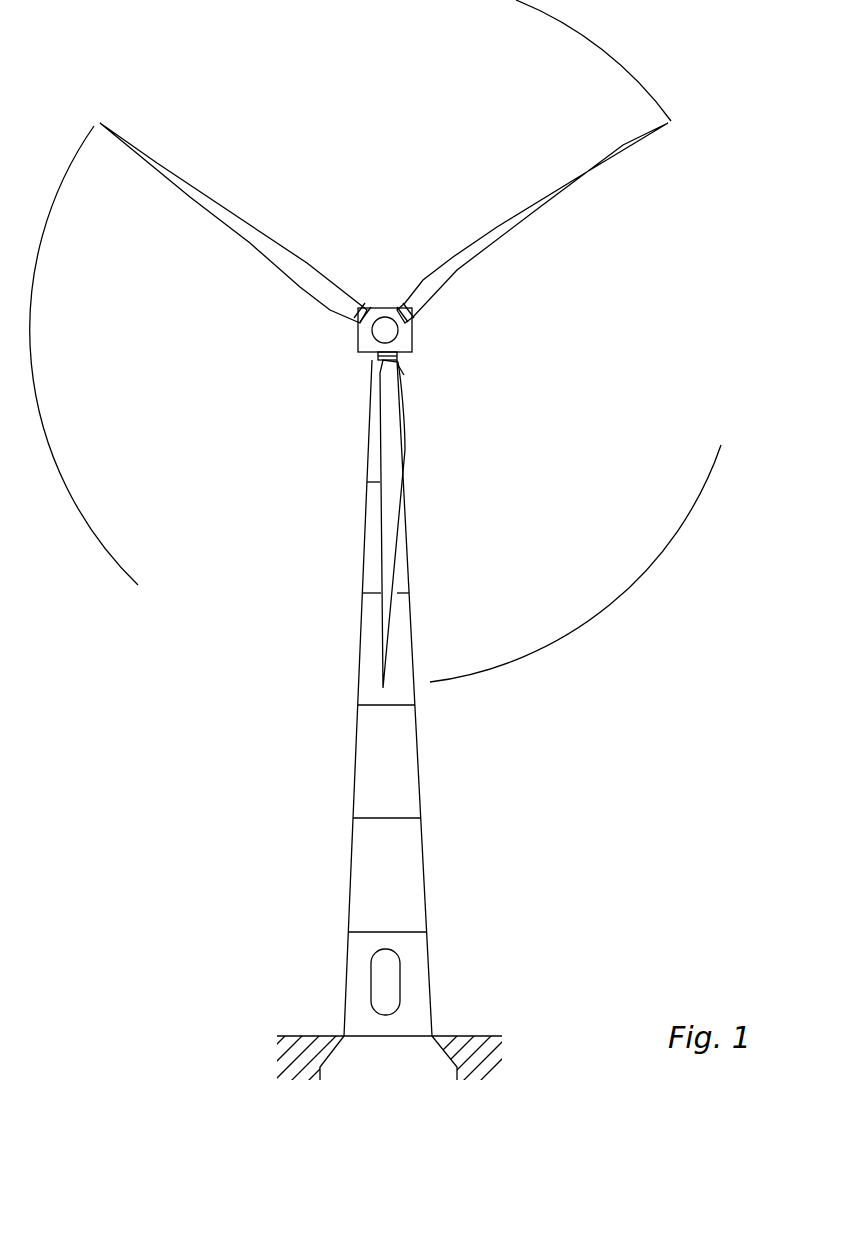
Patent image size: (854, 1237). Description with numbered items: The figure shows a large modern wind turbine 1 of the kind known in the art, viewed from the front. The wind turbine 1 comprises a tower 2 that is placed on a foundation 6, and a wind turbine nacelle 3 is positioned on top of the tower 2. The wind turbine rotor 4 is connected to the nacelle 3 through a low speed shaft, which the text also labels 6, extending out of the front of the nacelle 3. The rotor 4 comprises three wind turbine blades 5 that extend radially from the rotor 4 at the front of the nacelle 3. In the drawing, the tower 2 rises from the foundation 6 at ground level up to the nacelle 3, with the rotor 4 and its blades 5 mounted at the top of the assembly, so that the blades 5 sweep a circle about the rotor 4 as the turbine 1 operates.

The wind turbine 1 is at (338, 869).
The tower 2 is at (392, 747).
The wind turbine nacelle 3 is at (415, 348).
The wind turbine rotor 4 is at (386, 318).
The wind turbine blades 5 is at (388, 552).
The foundation 6 is at (420, 1062).